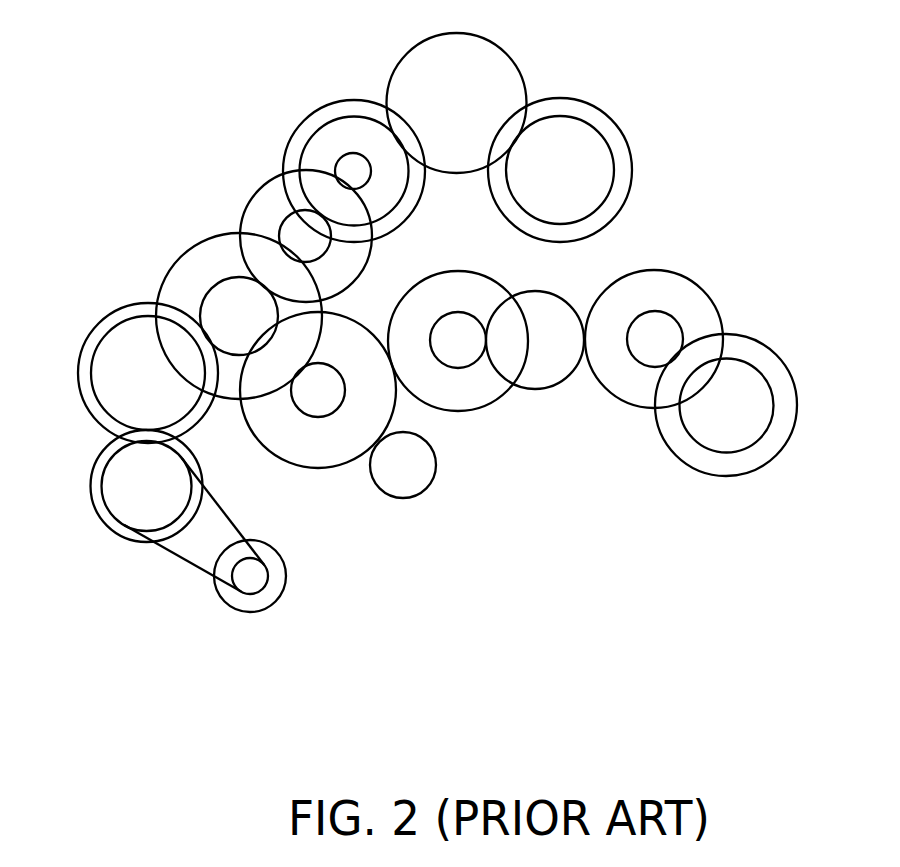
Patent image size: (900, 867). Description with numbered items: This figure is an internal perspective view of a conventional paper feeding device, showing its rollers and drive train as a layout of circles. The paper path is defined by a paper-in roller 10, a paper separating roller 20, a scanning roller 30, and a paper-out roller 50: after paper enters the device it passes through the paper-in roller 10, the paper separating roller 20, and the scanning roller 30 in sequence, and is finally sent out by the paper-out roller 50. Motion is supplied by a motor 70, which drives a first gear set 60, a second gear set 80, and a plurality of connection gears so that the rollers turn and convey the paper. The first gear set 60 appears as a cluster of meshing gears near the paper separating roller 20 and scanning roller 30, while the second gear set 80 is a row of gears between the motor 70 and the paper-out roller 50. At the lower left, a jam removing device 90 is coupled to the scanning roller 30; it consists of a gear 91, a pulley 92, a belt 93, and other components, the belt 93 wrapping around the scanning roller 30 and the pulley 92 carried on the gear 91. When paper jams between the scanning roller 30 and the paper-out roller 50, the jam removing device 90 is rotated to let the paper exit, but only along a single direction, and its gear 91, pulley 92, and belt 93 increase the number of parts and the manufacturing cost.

The paper-in roller 10 is at (575, 110).
The paper separating roller 20 is at (322, 120).
The scanning roller 30 is at (113, 488).
The paper-out roller 50 is at (762, 405).
The first gear set 60 is at (257, 215).
The motor 70 is at (402, 488).
The second gear set 80 is at (618, 385).
The jam removing device 90 is at (205, 606).
The gear 91 is at (228, 607).
The pulley 92 is at (258, 583).
The belt 93 is at (193, 568).